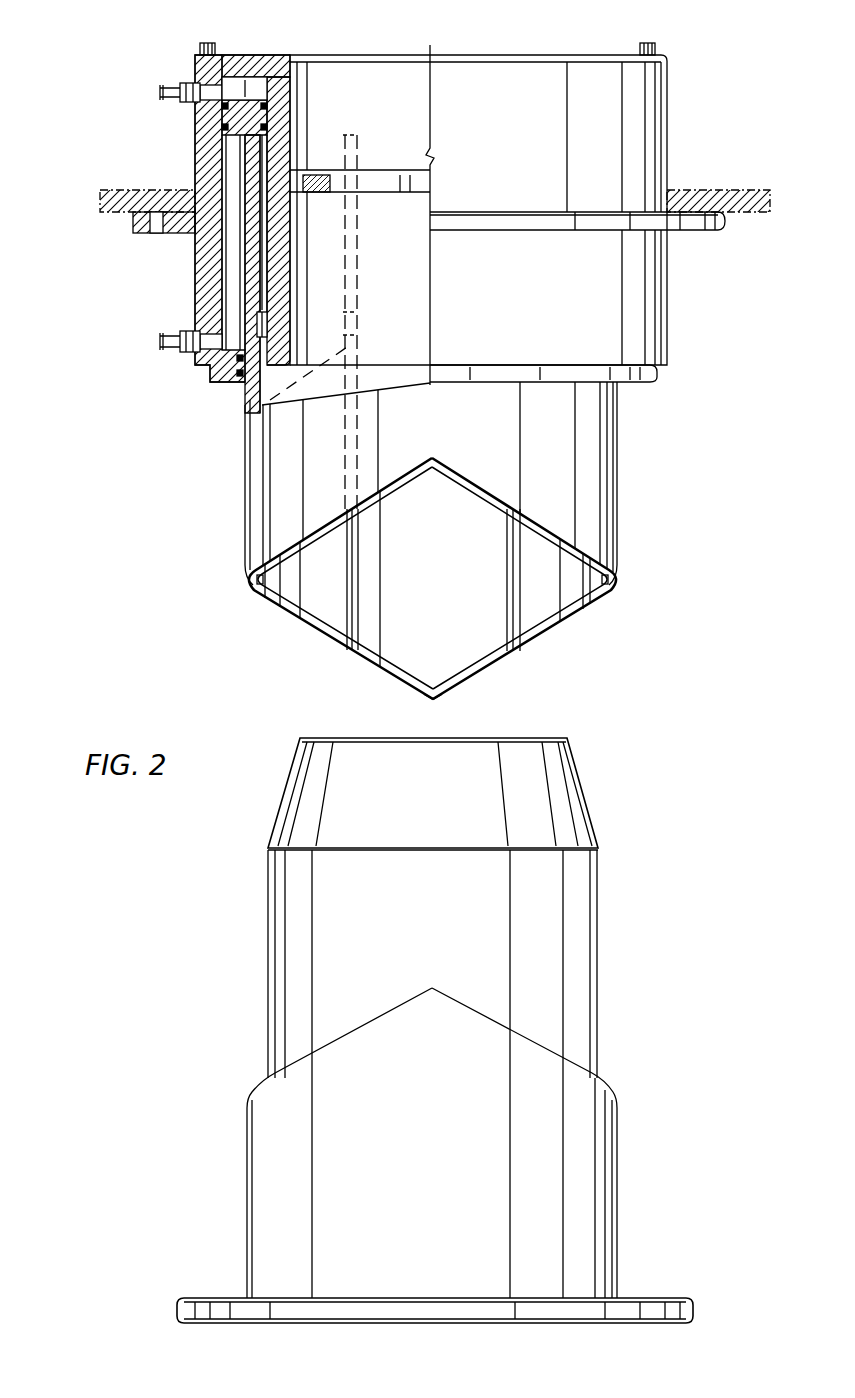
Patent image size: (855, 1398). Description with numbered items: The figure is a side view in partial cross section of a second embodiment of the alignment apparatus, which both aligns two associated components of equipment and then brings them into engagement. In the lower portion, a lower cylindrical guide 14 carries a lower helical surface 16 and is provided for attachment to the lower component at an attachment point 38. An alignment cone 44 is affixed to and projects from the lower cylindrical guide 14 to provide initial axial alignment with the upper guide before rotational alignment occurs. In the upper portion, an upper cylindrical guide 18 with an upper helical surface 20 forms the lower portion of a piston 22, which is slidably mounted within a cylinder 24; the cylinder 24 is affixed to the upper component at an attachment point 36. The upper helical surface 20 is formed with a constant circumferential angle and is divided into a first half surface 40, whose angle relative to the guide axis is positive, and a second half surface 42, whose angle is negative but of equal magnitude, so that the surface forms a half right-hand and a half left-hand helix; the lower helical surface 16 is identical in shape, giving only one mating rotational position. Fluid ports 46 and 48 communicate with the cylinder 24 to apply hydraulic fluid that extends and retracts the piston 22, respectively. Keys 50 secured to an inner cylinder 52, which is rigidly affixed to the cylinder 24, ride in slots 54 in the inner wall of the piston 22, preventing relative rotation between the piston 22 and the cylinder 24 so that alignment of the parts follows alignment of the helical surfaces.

The lower cylindrical guide 14 is at (620, 1233).
The lower helical surface 16 is at (343, 1033).
The upper cylindrical guide 18 is at (615, 503).
The upper helical surface 20 is at (430, 697).
The piston 22 is at (247, 220).
The cylinder 24 is at (195, 290).
The attachment point 36 is at (712, 197).
The attachment point 38 is at (195, 1298).
The first half surface 40 is at (585, 612).
The second half surface 42 is at (295, 620).
The alignment cone 44 is at (575, 800).
The fluid port 46 is at (185, 85).
The fluid port 48 is at (180, 347).
The keys 50 is at (243, 398).
The inner cylinder 52 is at (283, 112).
The slots 54 is at (357, 563).